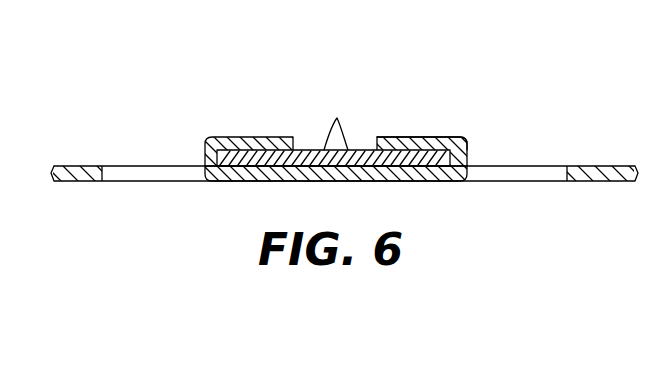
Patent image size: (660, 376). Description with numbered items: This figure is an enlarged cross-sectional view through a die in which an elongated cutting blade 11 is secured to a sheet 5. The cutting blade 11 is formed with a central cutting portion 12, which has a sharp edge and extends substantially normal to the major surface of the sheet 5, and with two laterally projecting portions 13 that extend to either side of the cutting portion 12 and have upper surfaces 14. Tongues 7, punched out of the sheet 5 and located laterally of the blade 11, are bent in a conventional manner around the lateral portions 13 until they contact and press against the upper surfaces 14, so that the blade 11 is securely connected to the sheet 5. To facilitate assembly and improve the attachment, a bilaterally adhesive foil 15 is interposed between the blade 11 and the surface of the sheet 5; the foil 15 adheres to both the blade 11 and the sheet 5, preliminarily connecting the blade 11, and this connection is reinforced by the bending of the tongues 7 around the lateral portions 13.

The sheet 5 is at (587, 166).
The tongues 7 is at (220, 134).
The cutting blade 11 is at (349, 108).
The central cutting portion 12 is at (348, 126).
The laterally projecting portions 13 is at (421, 136).
The upper surfaces 14 is at (322, 142).
The bilaterally adhesive foil 15 is at (270, 165).